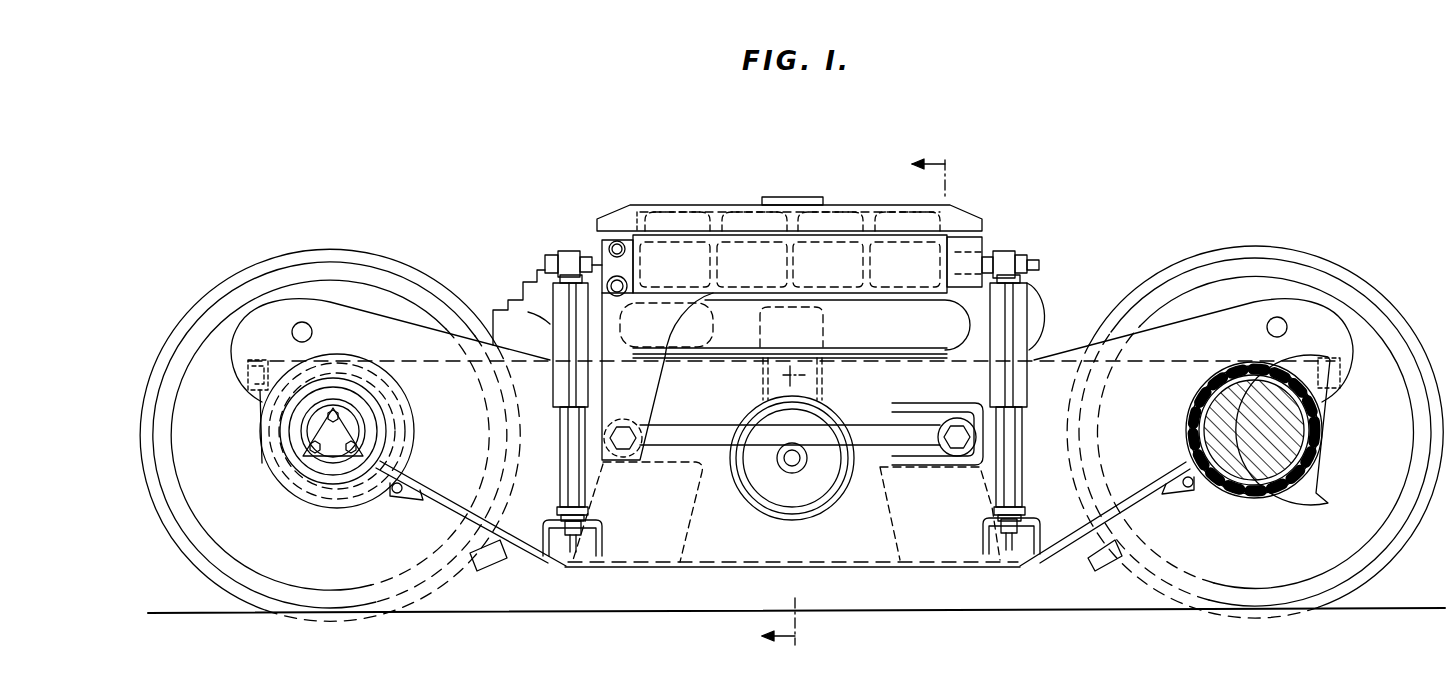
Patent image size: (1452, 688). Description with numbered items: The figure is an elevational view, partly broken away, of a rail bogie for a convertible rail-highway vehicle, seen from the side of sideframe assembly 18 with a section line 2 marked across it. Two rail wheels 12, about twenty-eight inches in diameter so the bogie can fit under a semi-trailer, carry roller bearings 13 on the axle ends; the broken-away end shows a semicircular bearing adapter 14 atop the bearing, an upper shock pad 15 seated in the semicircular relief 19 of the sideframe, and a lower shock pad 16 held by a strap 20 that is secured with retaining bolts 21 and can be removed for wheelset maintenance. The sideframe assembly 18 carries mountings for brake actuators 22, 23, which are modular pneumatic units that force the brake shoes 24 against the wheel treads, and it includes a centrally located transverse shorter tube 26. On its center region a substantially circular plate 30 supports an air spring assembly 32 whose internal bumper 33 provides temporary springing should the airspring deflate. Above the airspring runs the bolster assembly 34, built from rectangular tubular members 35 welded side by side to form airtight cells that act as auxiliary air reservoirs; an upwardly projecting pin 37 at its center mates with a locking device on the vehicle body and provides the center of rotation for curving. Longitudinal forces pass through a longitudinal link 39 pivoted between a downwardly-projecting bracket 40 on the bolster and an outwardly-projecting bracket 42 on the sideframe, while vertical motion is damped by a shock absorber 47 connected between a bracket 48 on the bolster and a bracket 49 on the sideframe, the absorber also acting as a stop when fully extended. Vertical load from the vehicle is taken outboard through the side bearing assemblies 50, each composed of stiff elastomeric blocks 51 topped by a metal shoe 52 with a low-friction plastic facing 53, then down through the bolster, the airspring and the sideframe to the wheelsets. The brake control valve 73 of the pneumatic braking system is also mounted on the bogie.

The section line 2- 2 is at (853, 402).
The rail wheel 12 is at (244, 277).
The roller bearing 13 is at (327, 463).
The semicircular bearing adapter 14 is at (410, 435).
The upper shock pad 15 is at (1200, 395).
The lower shock pad 16 is at (348, 495).
The sideframe assembly 18 is at (707, 567).
The semicircular relief 19 is at (1182, 413).
The strap 20 is at (262, 468).
The retaining bolt 21 is at (246, 372).
The brake actuator 22 is at (702, 516).
The brake actuator 23 is at (882, 514).
The brake shoe 24 is at (487, 560).
The shorter tube 26 is at (790, 520).
The circular plate 30 is at (685, 360).
The air spring assembly 32 is at (902, 345).
The internal bumper 33 is at (758, 326).
The bolster assembly 34 is at (776, 225).
The rectangular tubular member 35 is at (703, 258).
The upwardly projecting pin 37 is at (783, 195).
The longitudinal link 39 is at (688, 423).
The downwardly-projecting bracket 40 is at (616, 462).
The outwardly-projecting bracket 42 is at (960, 465).
The shock absorber 47 is at (528, 312).
The bracket 48 is at (986, 247).
The bracket 49 is at (600, 545).
The side bearing assembly 50 is at (978, 200).
The elastomeric block 51 is at (695, 207).
The metal shoe 52 is at (597, 223).
The low-friction plastic facing 53 is at (660, 205).
The brake control valve 73 is at (542, 264).